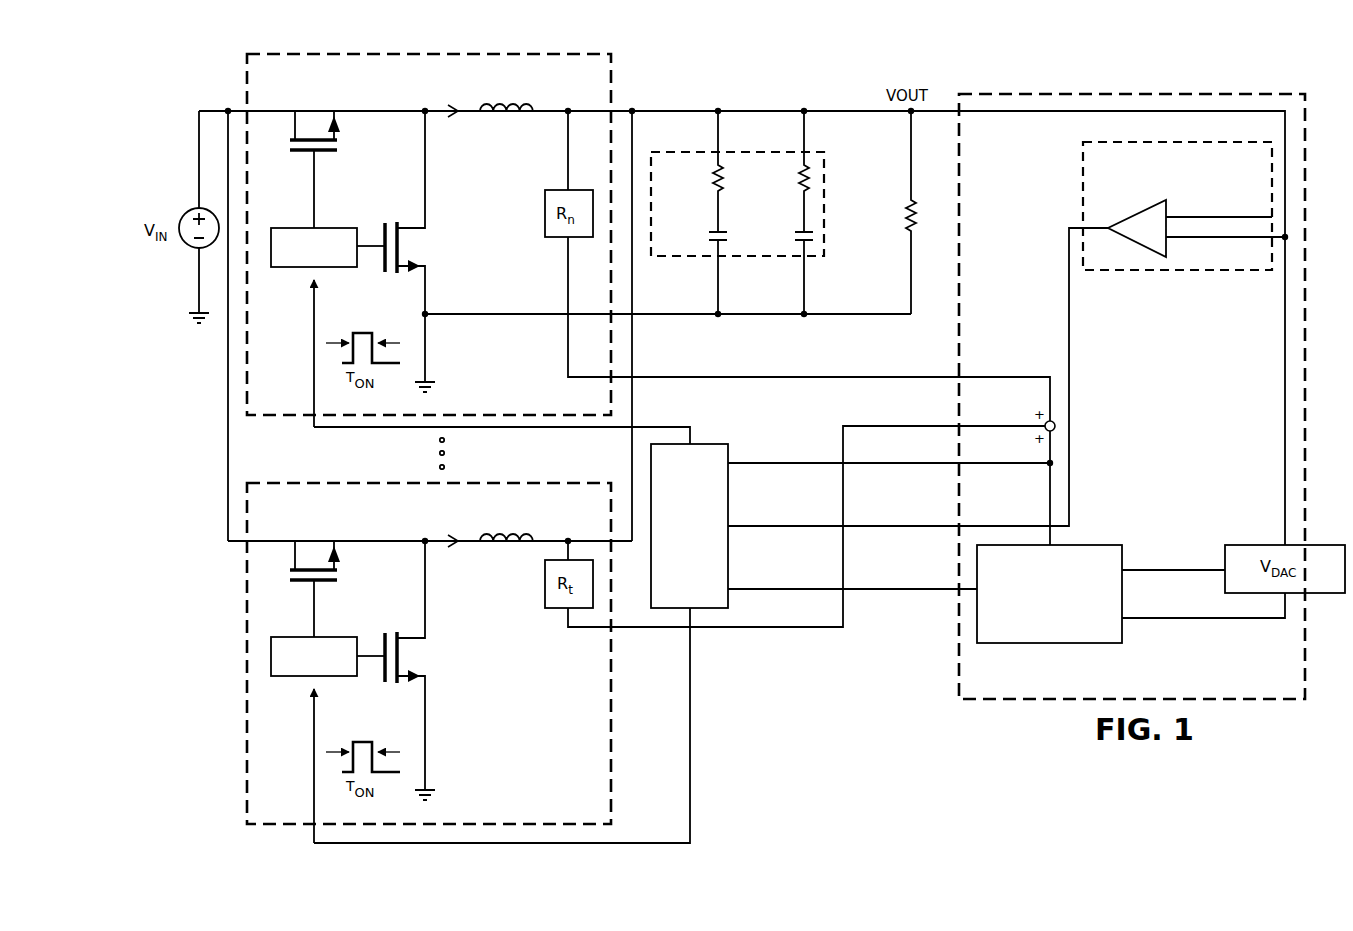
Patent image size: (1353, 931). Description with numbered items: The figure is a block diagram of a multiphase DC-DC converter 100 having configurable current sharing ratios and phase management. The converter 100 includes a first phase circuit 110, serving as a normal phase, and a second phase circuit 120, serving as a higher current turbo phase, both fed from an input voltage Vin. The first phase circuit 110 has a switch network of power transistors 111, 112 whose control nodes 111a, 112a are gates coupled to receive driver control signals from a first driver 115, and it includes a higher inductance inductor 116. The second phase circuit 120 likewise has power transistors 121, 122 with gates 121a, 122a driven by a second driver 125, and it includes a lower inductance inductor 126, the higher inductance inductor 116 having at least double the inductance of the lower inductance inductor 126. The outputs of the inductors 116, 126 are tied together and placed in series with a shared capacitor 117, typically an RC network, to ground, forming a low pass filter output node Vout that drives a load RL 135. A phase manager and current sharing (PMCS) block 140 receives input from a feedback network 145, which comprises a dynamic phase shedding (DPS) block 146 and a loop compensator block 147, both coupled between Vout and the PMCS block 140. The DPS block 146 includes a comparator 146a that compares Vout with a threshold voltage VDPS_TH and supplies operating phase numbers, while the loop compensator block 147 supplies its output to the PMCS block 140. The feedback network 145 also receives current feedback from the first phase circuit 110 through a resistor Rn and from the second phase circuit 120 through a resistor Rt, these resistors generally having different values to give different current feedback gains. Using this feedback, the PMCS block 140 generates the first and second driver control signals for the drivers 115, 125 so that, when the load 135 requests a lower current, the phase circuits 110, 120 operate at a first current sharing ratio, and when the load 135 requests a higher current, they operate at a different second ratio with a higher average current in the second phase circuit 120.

The multiphase DC-DC converter 100 is at (917, 742).
The first phase circuit 110 is at (301, 420).
The power transistor 111 is at (298, 145).
The control node 111a is at (302, 154).
The power transistor 112 is at (432, 250).
The control node 112a is at (380, 226).
The first driver 115 is at (297, 270).
The higher inductance inductor 116 is at (501, 118).
The shared capacitor 117 is at (829, 179).
The second phase circuit 120 is at (244, 723).
The power transistor 121 is at (298, 565).
The control node 121a is at (302, 584).
The power transistor 122 is at (432, 669).
The control node 122a is at (380, 676).
The second driver 125 is at (297, 679).
The lower inductance inductor 126 is at (501, 548).
The load 135 is at (905, 214).
The phase manager and current sharing (PMCS) block 140 is at (705, 443).
The feedback network 145 is at (1259, 705).
The dynamic phase shedding (DPS) block 146 is at (1150, 206).
The comparator 146a is at (1140, 209).
The loop compensator block 147 is at (1032, 616).